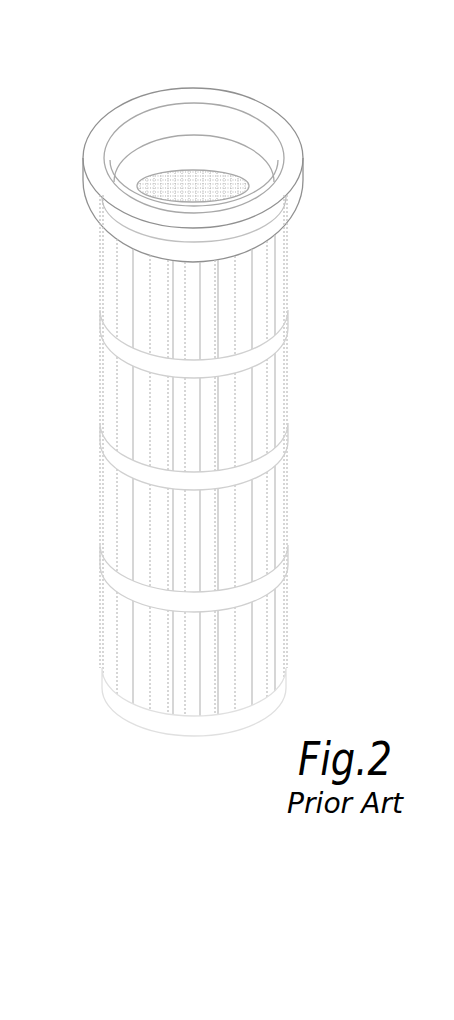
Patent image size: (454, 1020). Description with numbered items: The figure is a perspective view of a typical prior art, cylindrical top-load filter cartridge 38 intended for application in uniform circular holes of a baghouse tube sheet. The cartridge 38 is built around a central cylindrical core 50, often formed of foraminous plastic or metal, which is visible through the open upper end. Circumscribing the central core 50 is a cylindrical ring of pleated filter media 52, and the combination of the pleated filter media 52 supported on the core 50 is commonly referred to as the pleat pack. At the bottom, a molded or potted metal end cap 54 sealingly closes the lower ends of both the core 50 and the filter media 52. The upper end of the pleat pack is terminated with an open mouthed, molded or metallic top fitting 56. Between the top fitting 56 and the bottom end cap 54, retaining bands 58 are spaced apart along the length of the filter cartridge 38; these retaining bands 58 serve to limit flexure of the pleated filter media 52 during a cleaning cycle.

The filter cartridge 38 is at (310, 130).
The central cylindrical core 50 is at (208, 185).
The pleated filter media 52 is at (260, 415).
The end cap 54 is at (133, 710).
The top fitting 56 is at (183, 120).
The retaining bands 58 is at (118, 578).